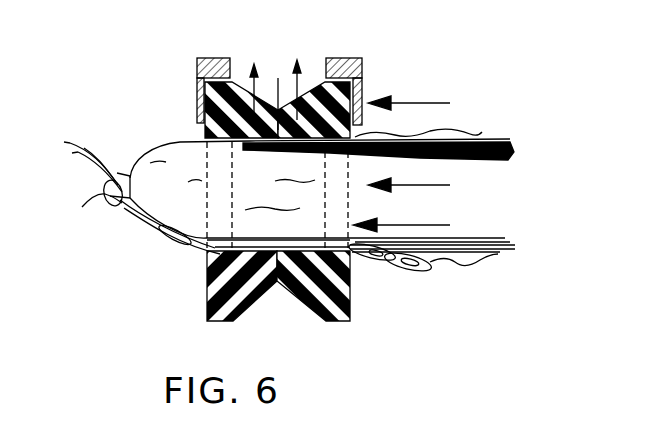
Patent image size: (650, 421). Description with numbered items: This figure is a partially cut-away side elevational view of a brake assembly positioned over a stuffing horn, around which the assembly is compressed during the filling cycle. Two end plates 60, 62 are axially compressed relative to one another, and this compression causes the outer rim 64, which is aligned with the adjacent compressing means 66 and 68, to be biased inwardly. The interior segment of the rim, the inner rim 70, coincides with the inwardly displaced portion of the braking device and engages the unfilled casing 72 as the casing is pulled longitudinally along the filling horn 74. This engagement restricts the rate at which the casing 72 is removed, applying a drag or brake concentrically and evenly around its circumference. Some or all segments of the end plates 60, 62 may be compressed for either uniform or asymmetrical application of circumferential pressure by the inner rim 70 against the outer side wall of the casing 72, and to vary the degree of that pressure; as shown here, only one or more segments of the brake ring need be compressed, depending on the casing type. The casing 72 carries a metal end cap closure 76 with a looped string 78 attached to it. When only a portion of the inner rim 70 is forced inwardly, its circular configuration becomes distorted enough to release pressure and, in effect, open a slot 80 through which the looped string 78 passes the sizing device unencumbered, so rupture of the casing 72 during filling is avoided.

The end plate 60 is at (207, 292).
The end plate 62 is at (350, 288).
The outer rim 64 is at (305, 95).
The compressing means 66 is at (198, 88).
The compressing means 68 is at (362, 68).
The inner rim 70 is at (206, 137).
The unfilled casing 72 is at (440, 134).
The filling horn 74 is at (500, 254).
The metal end cap closure 76 is at (106, 206).
The looped string 78 is at (437, 268).
The slot 80 is at (206, 251).